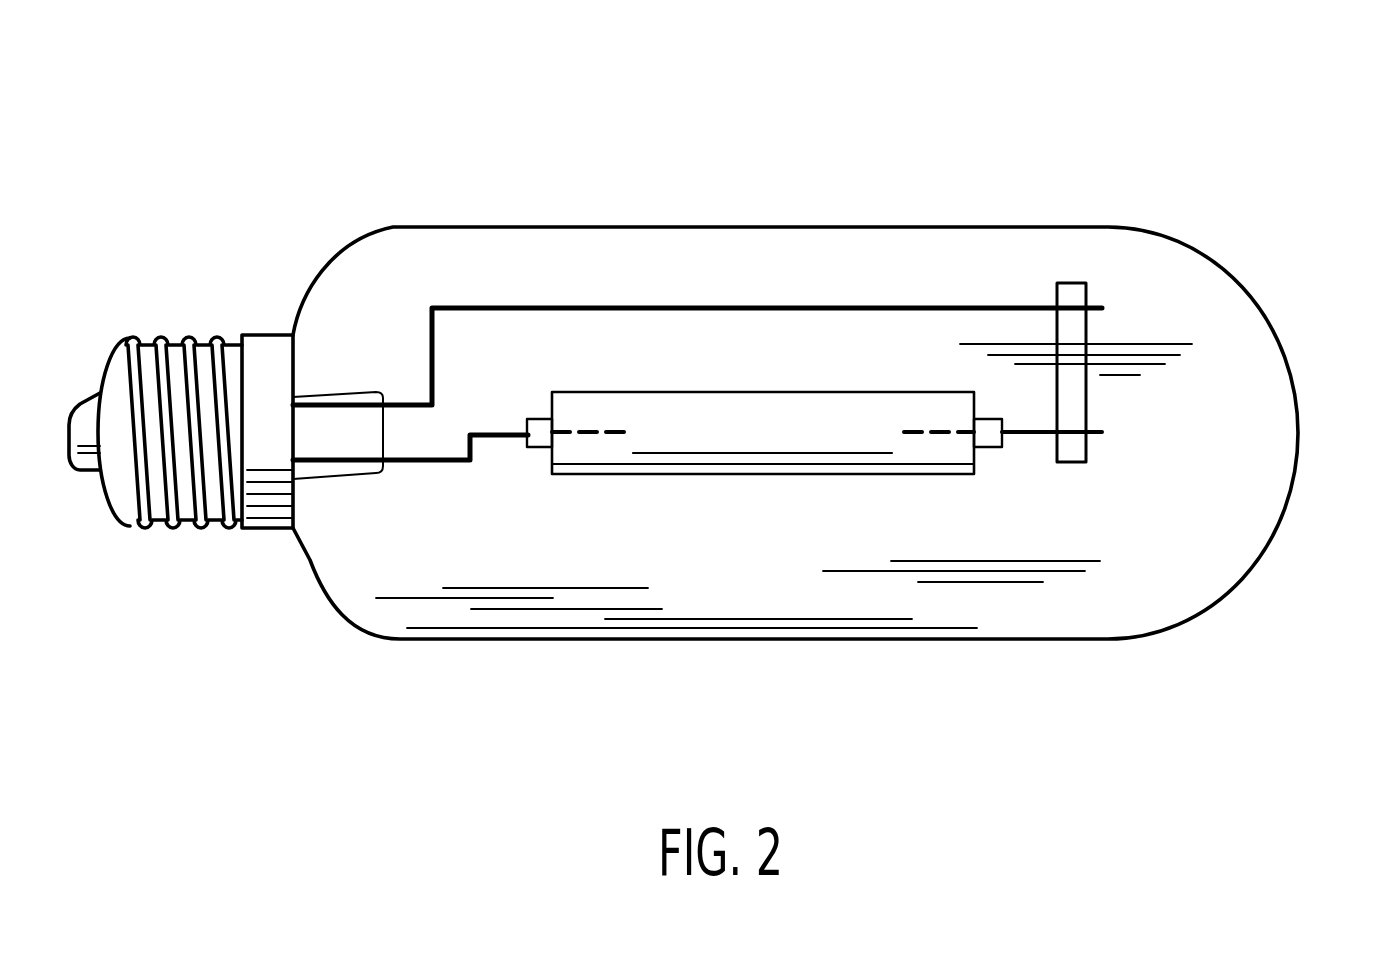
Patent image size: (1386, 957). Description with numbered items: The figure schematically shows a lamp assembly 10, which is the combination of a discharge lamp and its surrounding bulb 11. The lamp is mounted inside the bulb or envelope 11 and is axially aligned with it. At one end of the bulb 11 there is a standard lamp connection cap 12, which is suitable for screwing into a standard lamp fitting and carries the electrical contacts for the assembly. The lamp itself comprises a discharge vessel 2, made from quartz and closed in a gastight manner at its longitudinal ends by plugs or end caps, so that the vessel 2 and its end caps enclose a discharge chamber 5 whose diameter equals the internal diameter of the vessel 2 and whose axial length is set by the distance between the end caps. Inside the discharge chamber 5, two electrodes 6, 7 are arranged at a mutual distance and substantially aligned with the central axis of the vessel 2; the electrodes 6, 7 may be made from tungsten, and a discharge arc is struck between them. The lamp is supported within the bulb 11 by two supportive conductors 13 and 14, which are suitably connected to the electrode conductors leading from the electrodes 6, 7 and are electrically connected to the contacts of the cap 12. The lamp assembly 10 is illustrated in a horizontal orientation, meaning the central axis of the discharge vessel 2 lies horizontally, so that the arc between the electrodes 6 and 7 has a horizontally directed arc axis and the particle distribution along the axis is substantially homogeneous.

The lamp assembly 10 is at (452, 140).
The bulb 11 is at (1289, 493).
The lamp connection cap 12 is at (182, 528).
The supportive conductor 13 is at (408, 463).
The supportive conductor 14 is at (856, 306).
The discharge chamber 5 is at (695, 418).
The discharge vessel 2 is at (741, 474).
The electrode 6 is at (583, 440).
The electrode 7 is at (940, 440).